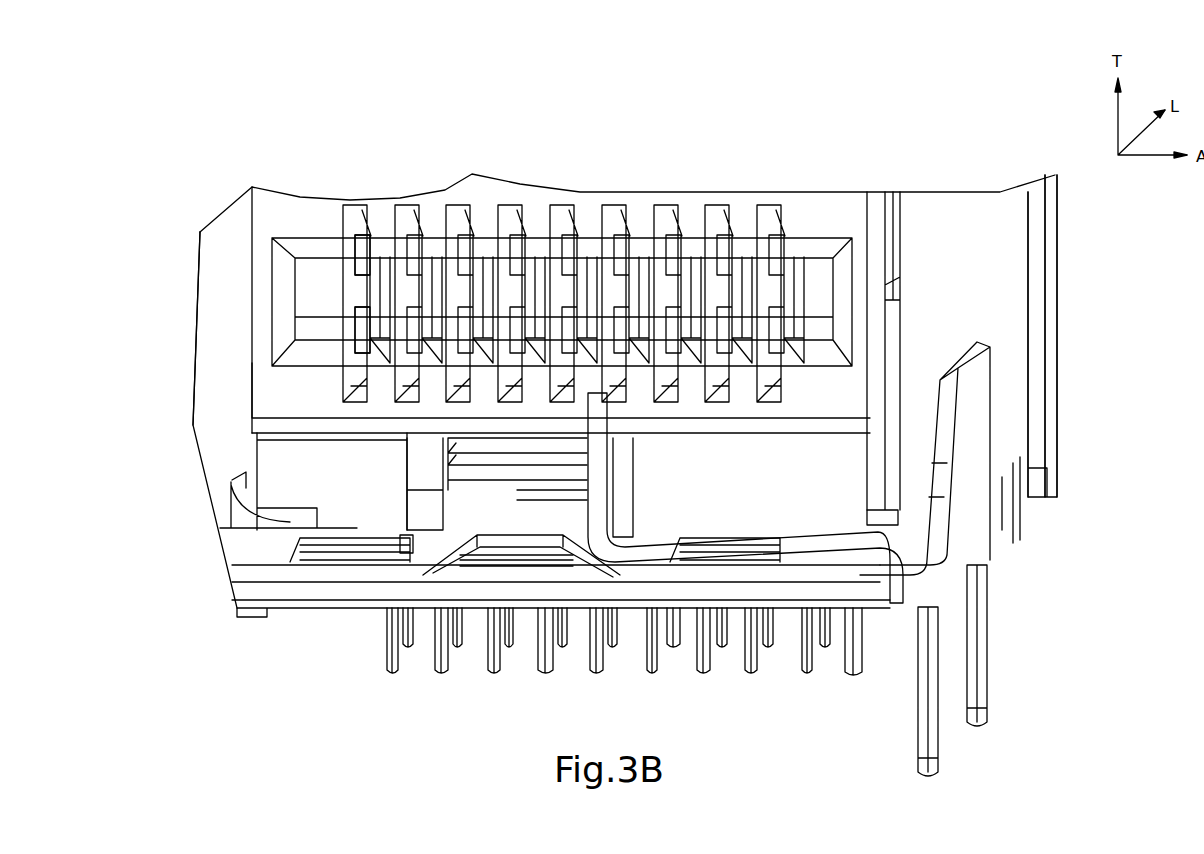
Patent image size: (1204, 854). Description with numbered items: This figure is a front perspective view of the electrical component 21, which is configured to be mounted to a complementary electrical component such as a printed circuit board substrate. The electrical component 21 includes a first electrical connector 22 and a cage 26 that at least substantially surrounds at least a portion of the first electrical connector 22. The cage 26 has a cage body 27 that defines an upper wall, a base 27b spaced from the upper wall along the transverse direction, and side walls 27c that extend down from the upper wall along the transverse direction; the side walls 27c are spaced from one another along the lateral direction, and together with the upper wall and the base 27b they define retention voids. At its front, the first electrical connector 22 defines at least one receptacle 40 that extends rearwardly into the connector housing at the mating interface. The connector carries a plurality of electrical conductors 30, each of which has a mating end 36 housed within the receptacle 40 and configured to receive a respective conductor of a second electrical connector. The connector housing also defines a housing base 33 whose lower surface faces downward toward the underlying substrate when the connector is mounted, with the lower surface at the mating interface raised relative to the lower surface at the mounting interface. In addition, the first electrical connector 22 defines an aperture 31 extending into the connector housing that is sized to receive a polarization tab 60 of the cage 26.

The electrical component 21 is at (234, 130).
The first electrical connector 22 is at (830, 226).
The cage 26 is at (990, 248).
The cage body 27 is at (1030, 359).
The base 27b is at (358, 608).
The side walls 27c is at (1002, 298).
The electrical conductors 30 is at (351, 268).
The aperture 31 is at (603, 420).
The housing base 33 is at (300, 428).
The mating end 36 is at (413, 274).
The receptacle 40 is at (270, 286).
The polarization tab 60 is at (617, 497).